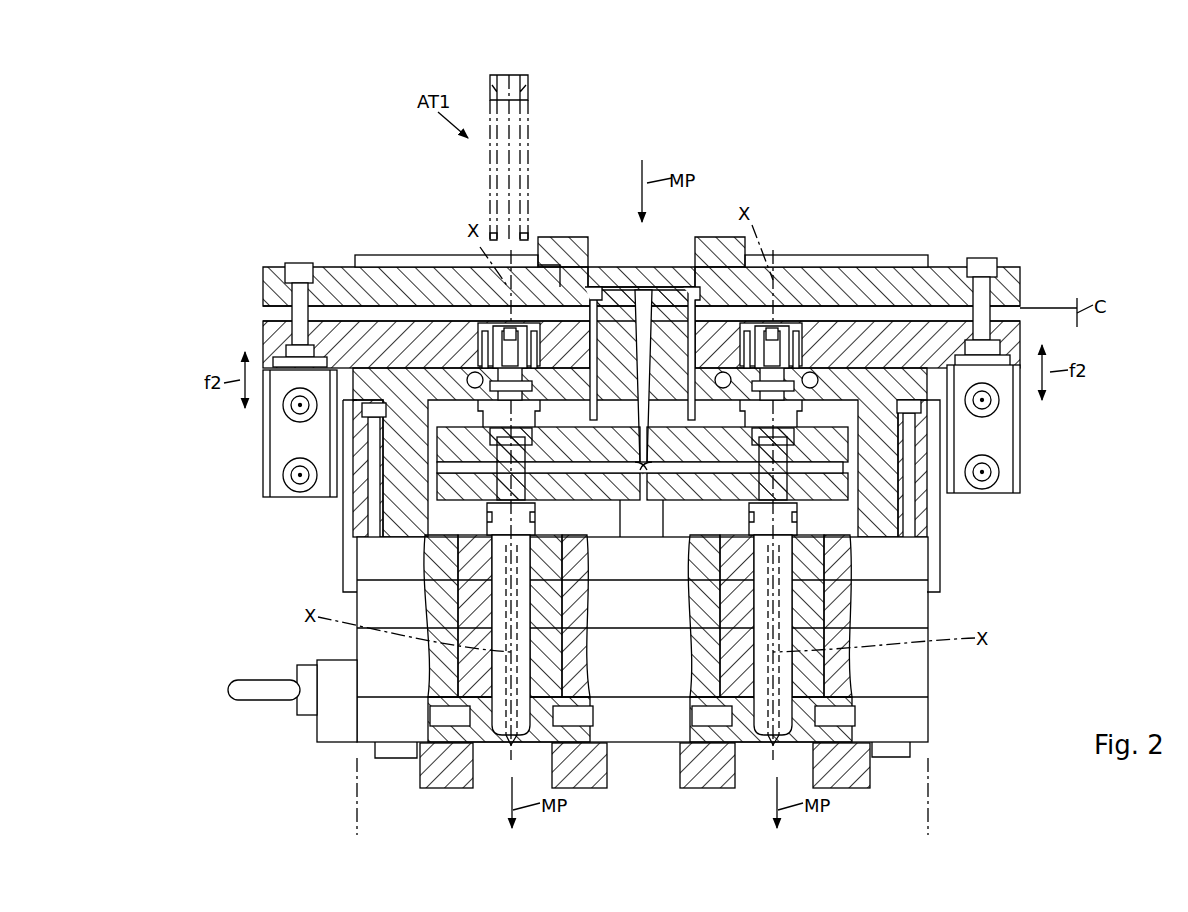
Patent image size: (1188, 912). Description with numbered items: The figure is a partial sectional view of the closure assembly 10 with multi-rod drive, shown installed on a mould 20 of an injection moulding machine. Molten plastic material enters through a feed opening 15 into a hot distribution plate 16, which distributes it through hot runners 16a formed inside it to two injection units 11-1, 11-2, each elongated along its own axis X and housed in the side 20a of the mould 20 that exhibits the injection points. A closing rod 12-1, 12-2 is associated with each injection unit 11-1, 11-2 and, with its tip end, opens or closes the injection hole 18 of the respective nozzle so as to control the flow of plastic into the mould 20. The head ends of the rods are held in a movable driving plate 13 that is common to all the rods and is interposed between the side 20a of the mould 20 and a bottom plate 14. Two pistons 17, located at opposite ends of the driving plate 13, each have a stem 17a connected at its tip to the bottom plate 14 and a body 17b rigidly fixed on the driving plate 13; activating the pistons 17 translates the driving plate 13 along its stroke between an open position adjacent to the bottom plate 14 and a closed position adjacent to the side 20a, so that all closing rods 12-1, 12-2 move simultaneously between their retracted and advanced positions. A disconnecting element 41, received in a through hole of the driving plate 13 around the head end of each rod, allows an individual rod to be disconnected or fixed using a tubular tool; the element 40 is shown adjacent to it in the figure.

The closure assembly 10 is at (647, 500).
The injection unit 11-1 is at (480, 667).
The injection unit 11-2 is at (803, 673).
The closing rod 12-1 is at (487, 316).
The closing rod 12-2 is at (828, 418).
The movable driving plate 13 is at (867, 330).
The bottom plate 14 is at (913, 266).
The feed opening 15 is at (588, 255).
The hot distribution plate 16 is at (842, 385).
The hot runners 16a is at (603, 372).
The piston 17 is at (641, 377).
The stem 17a is at (988, 290).
The body 17b is at (1010, 445).
The injection hole 18 is at (511, 741).
The mould 20 is at (940, 702).
The side of the mould 20a is at (920, 358).
The pin clamping device 40 is at (510, 328).
The disconnecting element 41 is at (480, 347).